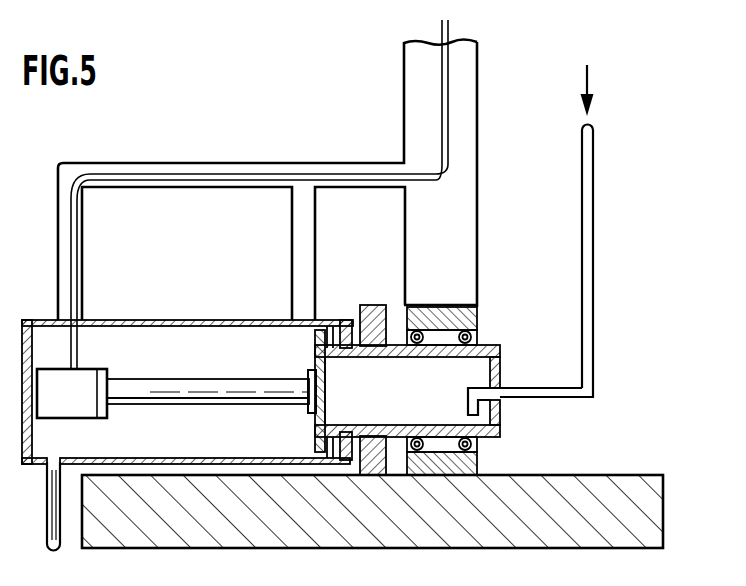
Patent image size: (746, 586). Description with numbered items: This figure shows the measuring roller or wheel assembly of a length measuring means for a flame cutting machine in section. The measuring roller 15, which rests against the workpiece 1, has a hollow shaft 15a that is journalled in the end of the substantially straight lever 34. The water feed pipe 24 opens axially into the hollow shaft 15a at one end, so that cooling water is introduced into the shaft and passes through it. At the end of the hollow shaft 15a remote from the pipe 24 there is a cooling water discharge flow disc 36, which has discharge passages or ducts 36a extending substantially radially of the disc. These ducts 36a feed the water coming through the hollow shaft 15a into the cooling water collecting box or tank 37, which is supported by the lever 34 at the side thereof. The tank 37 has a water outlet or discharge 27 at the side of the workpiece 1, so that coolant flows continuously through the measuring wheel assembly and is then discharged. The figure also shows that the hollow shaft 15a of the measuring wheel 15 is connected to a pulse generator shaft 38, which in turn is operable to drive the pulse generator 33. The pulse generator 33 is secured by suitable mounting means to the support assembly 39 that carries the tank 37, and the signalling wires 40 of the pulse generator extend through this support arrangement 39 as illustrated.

The workpiece 1 is at (654, 514).
The measuring roller 15 is at (376, 307).
The hollow shaft 15a is at (498, 346).
The water feed pipe 24 is at (594, 183).
The water outlet 27 is at (47, 518).
The pulse generator 33 is at (90, 372).
The lever 34 is at (476, 80).
The cooling water discharge flow disc 36 is at (316, 340).
The discharge ducts 36a is at (337, 320).
The cooling water collecting tank 37 is at (229, 320).
The pulse generator shaft 38 is at (173, 383).
The support assembly 39 is at (165, 171).
The signalling wires 40 is at (450, 31).